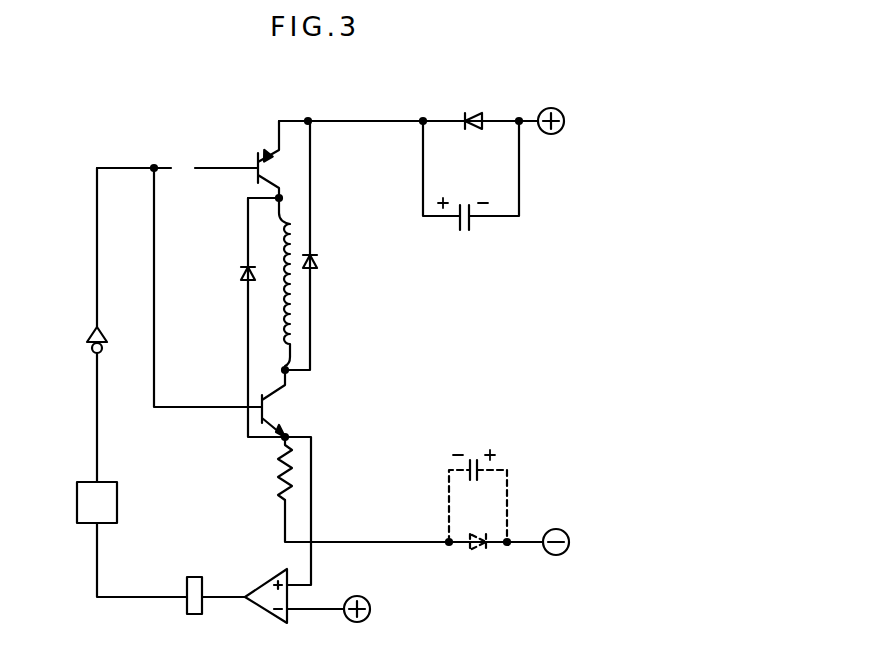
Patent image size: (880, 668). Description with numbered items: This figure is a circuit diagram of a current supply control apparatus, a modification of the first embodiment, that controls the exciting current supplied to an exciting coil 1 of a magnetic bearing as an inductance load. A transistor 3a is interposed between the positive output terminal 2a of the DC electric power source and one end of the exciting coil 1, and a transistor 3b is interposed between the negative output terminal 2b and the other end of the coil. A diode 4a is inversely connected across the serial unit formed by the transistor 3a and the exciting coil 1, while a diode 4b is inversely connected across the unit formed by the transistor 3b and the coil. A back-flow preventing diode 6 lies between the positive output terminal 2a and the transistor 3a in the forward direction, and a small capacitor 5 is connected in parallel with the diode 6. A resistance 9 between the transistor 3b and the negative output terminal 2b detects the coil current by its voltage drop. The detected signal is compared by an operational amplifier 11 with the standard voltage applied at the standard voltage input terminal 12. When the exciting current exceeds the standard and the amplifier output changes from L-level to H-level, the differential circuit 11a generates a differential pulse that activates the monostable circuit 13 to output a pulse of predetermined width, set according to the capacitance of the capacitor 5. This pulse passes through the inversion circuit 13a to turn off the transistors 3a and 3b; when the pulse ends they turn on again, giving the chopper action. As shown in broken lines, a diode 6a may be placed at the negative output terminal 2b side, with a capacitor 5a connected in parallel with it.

The exciting coil 1 is at (292, 307).
The positive output terminal 2a is at (564, 121).
The negative output terminal 2b is at (569, 542).
The transistor 3a is at (266, 152).
The transistor 3b is at (276, 409).
The diode 4a is at (318, 262).
The diode 4b is at (246, 280).
The capacitor 5 is at (475, 225).
The capacitor 5a is at (466, 456).
The back-flow preventing diode 6 is at (474, 131).
The diode 6a is at (478, 550).
The resistance 9 is at (281, 473).
The operational amplifier 11 is at (275, 612).
The differential circuit 11a is at (195, 577).
The standard voltage input terminal 12 is at (367, 619).
The monostable circuit 13 is at (117, 497).
The inversion circuit 13a is at (88, 335).